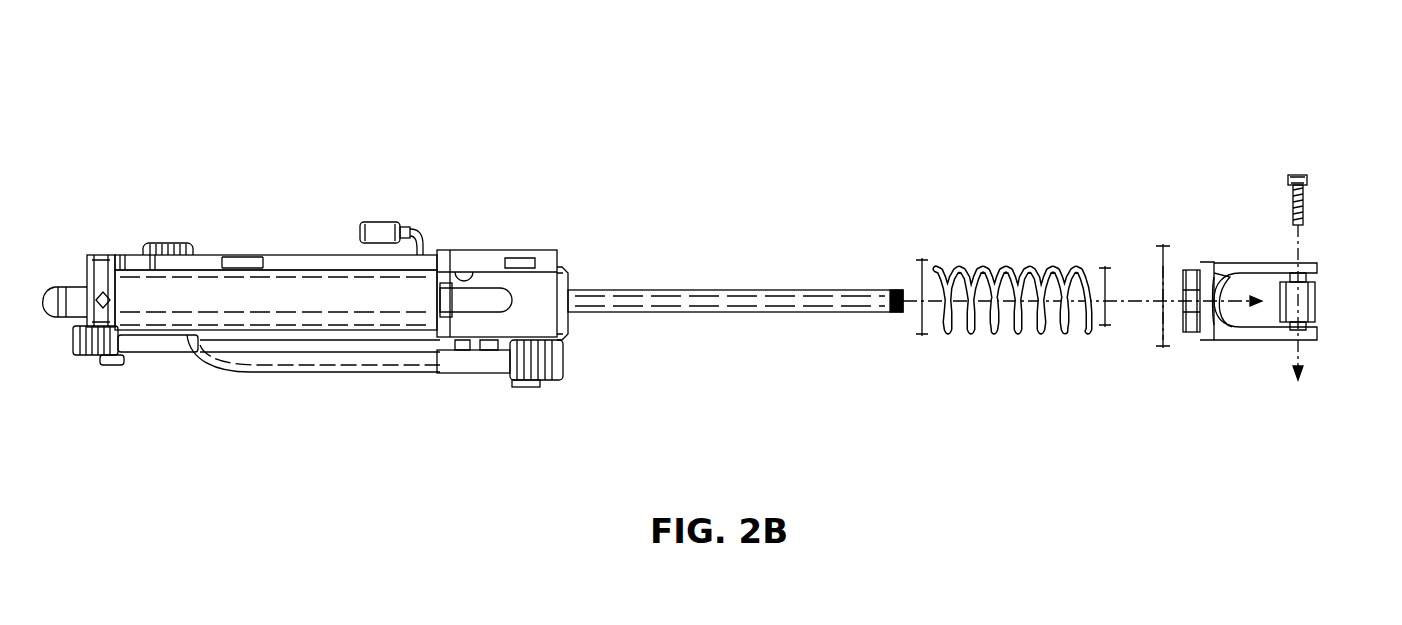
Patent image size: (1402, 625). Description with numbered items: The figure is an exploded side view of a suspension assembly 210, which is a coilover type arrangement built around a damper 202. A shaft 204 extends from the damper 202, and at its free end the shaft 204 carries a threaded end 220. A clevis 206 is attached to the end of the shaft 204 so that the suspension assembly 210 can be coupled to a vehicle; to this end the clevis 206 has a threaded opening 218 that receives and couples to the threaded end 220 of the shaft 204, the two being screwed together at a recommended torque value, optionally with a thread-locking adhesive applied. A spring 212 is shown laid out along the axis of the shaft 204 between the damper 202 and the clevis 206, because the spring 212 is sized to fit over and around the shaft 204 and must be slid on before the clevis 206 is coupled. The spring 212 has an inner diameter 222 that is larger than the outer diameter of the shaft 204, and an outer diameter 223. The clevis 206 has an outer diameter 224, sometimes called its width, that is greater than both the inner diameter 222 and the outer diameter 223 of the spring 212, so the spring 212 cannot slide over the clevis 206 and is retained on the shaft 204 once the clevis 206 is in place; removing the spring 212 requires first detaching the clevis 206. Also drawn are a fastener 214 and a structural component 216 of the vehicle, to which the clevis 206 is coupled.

The damper 202 is at (278, 292).
The shaft 204 is at (695, 300).
The clevis 206 is at (1204, 275).
The suspension assembly 210 is at (663, 92).
The spring 212 is at (1010, 300).
The fastener 214 is at (1300, 176).
The structural component 216 is at (1305, 300).
The threaded opening 218 is at (1187, 308).
The threaded end 220 is at (894, 290).
The inner diameter 222 is at (1105, 264).
The outer diameter 223 is at (919, 322).
The outer diameter 224 is at (1162, 240).